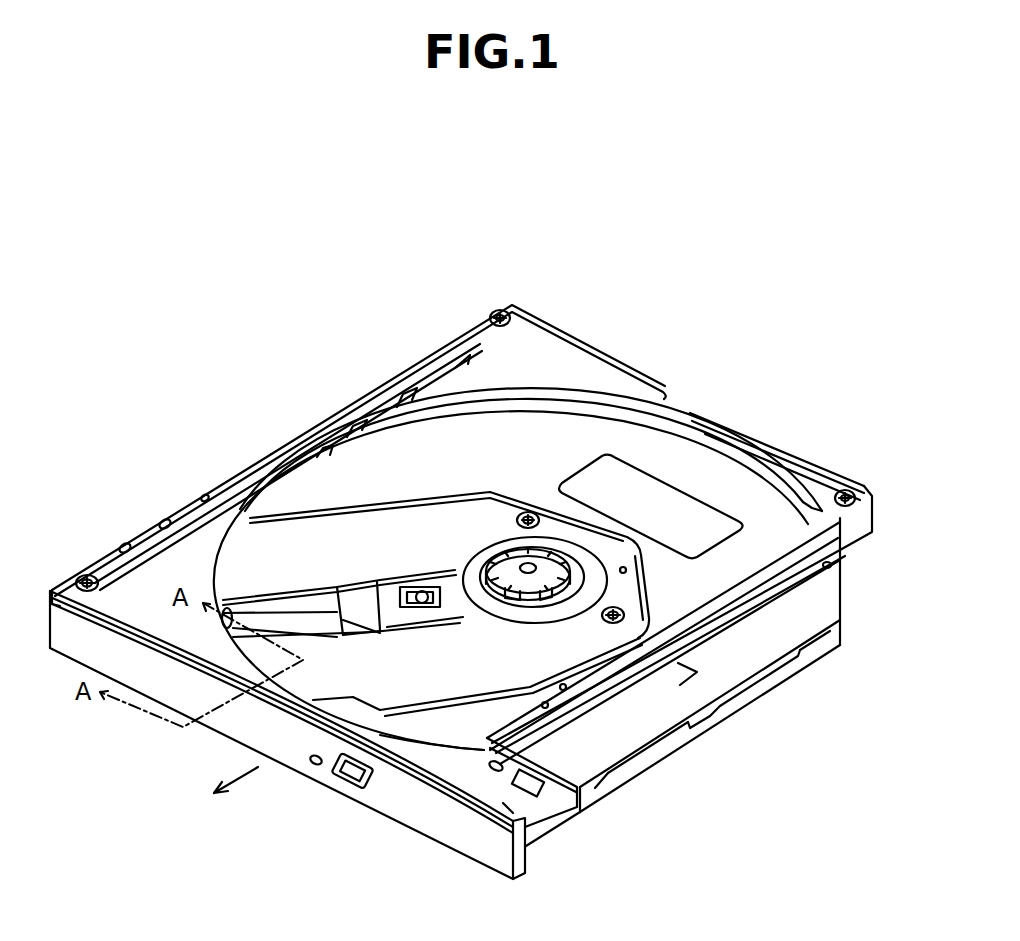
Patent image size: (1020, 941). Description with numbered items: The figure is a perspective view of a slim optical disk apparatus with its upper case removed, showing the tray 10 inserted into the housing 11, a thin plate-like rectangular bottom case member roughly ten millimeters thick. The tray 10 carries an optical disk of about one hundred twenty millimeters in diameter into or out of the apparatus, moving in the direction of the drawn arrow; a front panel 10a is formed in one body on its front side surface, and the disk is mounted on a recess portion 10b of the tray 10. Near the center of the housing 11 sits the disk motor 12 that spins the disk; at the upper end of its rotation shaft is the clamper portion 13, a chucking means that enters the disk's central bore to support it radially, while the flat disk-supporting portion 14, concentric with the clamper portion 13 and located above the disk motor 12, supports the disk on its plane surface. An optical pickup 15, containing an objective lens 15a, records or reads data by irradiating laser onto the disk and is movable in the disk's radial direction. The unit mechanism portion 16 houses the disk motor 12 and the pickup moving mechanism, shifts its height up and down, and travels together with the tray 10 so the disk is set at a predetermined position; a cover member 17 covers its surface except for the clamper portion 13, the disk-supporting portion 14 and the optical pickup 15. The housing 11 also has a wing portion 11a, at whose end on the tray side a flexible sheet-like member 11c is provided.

The tray 10 is at (500, 432).
The front panel 10a is at (437, 826).
The recess portion 10b is at (727, 465).
The housing 11 is at (283, 452).
The wing portion 11a is at (757, 660).
The flexible sheet-like member 11c is at (764, 572).
The disk motor 12 is at (470, 612).
The clamper portion 13 is at (534, 556).
The disk-supporting portion 14 is at (518, 606).
The optical pickup 15 is at (388, 605).
The objective lens 15a is at (426, 590).
The unit mechanism portion 16 is at (607, 545).
The cover member 17 is at (383, 528).